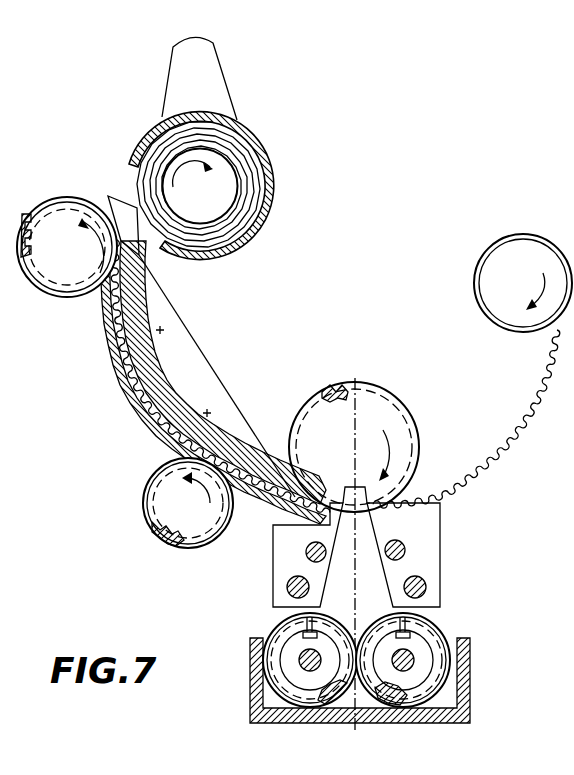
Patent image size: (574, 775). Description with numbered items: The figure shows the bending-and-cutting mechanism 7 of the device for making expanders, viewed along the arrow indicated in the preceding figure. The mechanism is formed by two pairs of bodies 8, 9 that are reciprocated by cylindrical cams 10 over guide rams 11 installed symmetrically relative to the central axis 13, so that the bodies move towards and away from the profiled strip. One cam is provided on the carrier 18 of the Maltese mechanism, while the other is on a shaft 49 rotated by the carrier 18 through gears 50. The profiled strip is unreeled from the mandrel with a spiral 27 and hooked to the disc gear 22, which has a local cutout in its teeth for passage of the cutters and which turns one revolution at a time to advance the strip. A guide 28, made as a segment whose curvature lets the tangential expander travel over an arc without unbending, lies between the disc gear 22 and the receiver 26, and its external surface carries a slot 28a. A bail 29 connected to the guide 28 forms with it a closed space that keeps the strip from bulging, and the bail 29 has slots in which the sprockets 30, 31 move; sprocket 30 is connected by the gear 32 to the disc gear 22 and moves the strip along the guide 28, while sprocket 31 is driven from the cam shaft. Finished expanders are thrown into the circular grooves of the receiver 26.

The bending-and-cutting mechanism 7 is at (260, 715).
The bodies 8 is at (432, 520).
The bodies 9 is at (278, 540).
The cams 10 is at (282, 660).
The guide rams 11 is at (287, 587).
The central axis 13 is at (361, 378).
The carrier 18 is at (300, 672).
The disc gear 22 is at (407, 455).
The receiver 26 is at (228, 190).
The mandrel with a spiral 27 is at (520, 238).
The guide 28 is at (197, 370).
The slot 28a is at (110, 297).
The bail 29 is at (118, 353).
The sprocket (disc) 30 is at (148, 498).
The sprocket (disc) 31 is at (143, 188).
The gear 32 is at (243, 133).
The shaft 49 is at (413, 650).
The gears 50 is at (375, 690).